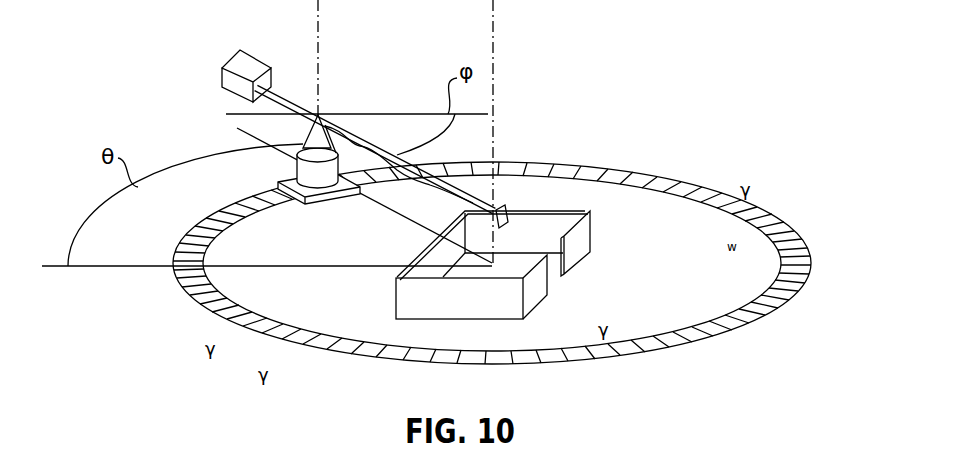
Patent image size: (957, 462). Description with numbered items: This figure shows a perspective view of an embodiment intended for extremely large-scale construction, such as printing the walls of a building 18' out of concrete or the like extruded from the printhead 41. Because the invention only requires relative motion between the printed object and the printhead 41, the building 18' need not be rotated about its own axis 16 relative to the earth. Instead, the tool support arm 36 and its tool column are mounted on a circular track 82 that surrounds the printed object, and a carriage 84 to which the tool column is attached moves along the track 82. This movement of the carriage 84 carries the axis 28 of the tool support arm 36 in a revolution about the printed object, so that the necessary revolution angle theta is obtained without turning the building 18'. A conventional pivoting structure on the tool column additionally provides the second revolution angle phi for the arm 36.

The axis 16 is at (494, 53).
The building 18' is at (548, 222).
The axis of the tool support arm 28 is at (319, 55).
The tool support arm 36 is at (350, 127).
The printhead 41 is at (512, 208).
The circular track 82 is at (793, 228).
The carriage 84 is at (285, 176).